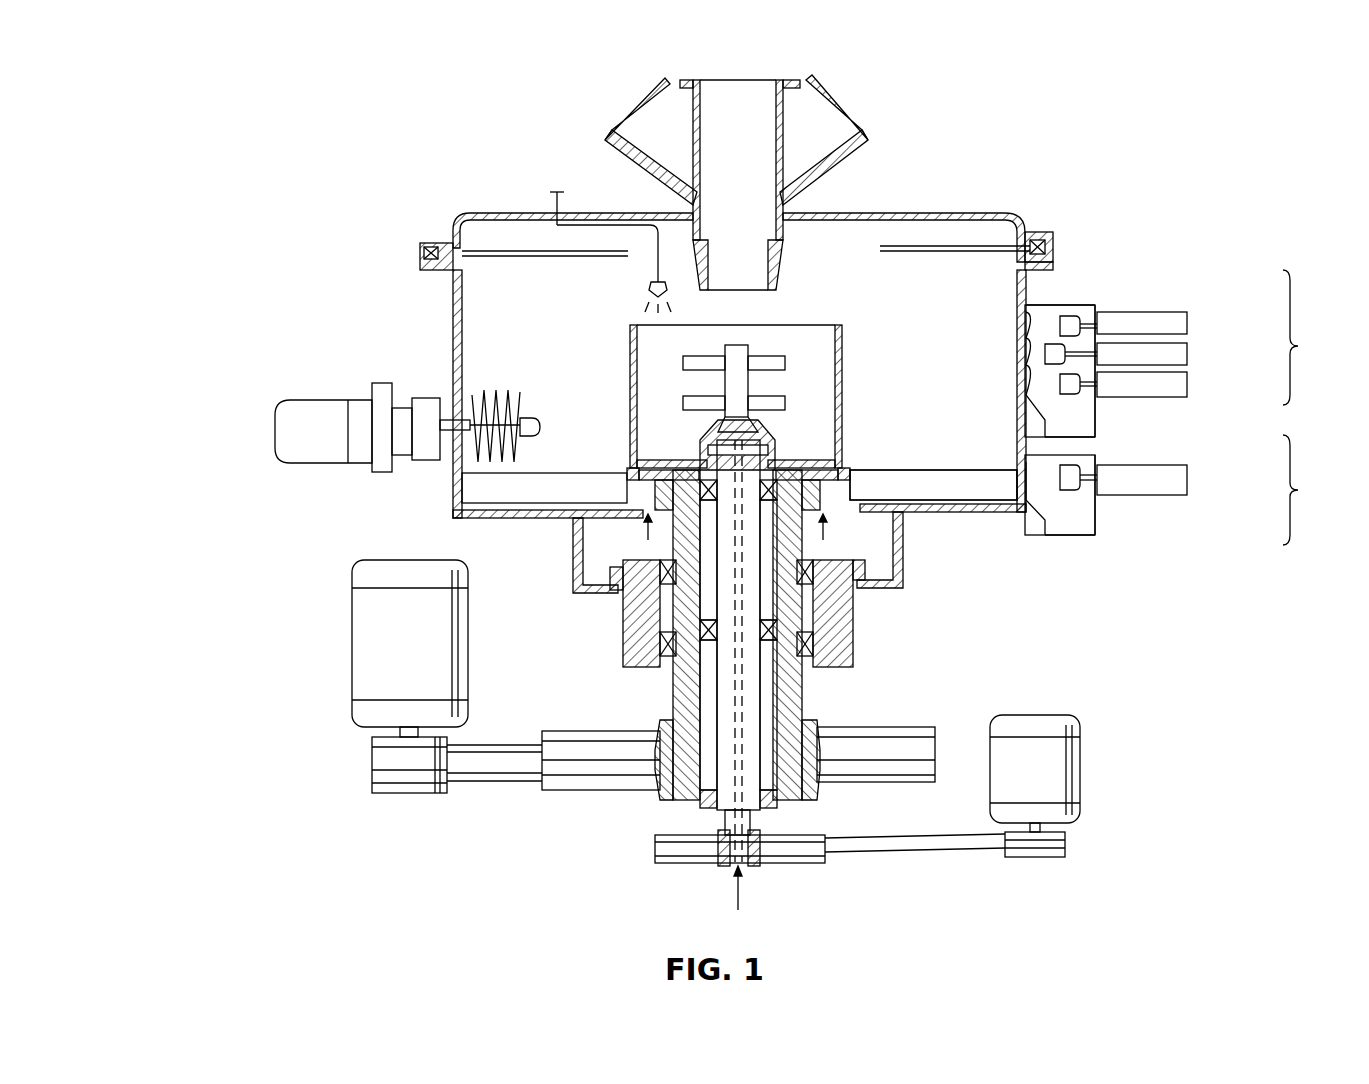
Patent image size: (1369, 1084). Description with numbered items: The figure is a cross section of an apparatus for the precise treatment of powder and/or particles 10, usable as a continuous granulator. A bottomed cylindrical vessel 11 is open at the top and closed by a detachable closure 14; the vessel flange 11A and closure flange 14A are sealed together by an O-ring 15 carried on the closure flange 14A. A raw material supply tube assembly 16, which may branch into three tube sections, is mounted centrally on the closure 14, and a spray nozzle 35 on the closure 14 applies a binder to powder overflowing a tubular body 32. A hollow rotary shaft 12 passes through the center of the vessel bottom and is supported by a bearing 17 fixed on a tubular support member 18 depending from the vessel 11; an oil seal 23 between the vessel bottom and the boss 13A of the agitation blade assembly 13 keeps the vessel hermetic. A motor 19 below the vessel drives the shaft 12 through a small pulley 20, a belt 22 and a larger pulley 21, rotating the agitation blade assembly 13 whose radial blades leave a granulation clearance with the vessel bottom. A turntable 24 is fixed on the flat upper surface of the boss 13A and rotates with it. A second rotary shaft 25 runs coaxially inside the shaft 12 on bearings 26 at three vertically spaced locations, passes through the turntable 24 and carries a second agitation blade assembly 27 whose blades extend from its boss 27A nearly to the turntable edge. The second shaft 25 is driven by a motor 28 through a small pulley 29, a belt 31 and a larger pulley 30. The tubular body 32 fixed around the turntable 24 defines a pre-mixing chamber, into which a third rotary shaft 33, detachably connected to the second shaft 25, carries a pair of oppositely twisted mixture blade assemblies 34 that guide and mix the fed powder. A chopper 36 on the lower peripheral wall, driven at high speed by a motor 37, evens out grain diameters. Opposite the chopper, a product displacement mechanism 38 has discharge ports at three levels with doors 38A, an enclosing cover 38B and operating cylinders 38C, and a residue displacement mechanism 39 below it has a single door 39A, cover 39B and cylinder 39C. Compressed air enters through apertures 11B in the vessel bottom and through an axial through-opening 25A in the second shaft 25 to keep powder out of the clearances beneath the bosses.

The apparatus for the precise treatment of powder and/or particles 10 is at (245, 262).
The vessel 11 is at (452, 336).
The flange 11A is at (1053, 265).
The apertures 11B is at (860, 490).
The rotary shaft 12 is at (800, 698).
The agitation blade assembly 13 is at (478, 497).
The boss 13A is at (628, 476).
The closure 14 is at (920, 212).
The flange 14A is at (1040, 232).
The O-ring 15 is at (1050, 238).
The raw material supply tube assembly 16 is at (838, 118).
The bearing 17 is at (855, 630).
The tubular support member 18 is at (905, 568).
The motor 19 is at (360, 660).
The small pulley 20 is at (398, 792).
The larger pulley 21 is at (588, 790).
The belt 22 is at (500, 760).
The oil seal 23 is at (580, 538).
The turntable 24 is at (842, 400).
The second rotary shaft 25 is at (750, 740).
The through-opening 25A is at (725, 860).
The bearings 26 is at (700, 645).
The second agitation blade assembly 27 is at (665, 460).
The boss 27A is at (700, 440).
The motor 28 is at (1060, 775).
The small pulley 29 is at (1040, 857).
The larger pulley 30 is at (800, 858).
The belt 31 is at (925, 852).
The tubular body 32 is at (830, 475).
The third rotary shaft 33 is at (742, 350).
The mixture blade assemblies 34 is at (782, 402).
The spray nozzle 35 is at (645, 285).
The chopper 36 is at (470, 455).
The motor 37 is at (305, 450).
The product displacement mechanism 38 is at (1181, 353).
The doors 38A is at (1028, 320).
The cover 38B is at (1095, 418).
The cylinders 38C is at (1180, 352).
The residue displacement mechanism 39 is at (1181, 490).
The door 39A is at (1028, 470).
The cover 39B is at (1095, 528).
The cylinder 39C is at (1180, 478).